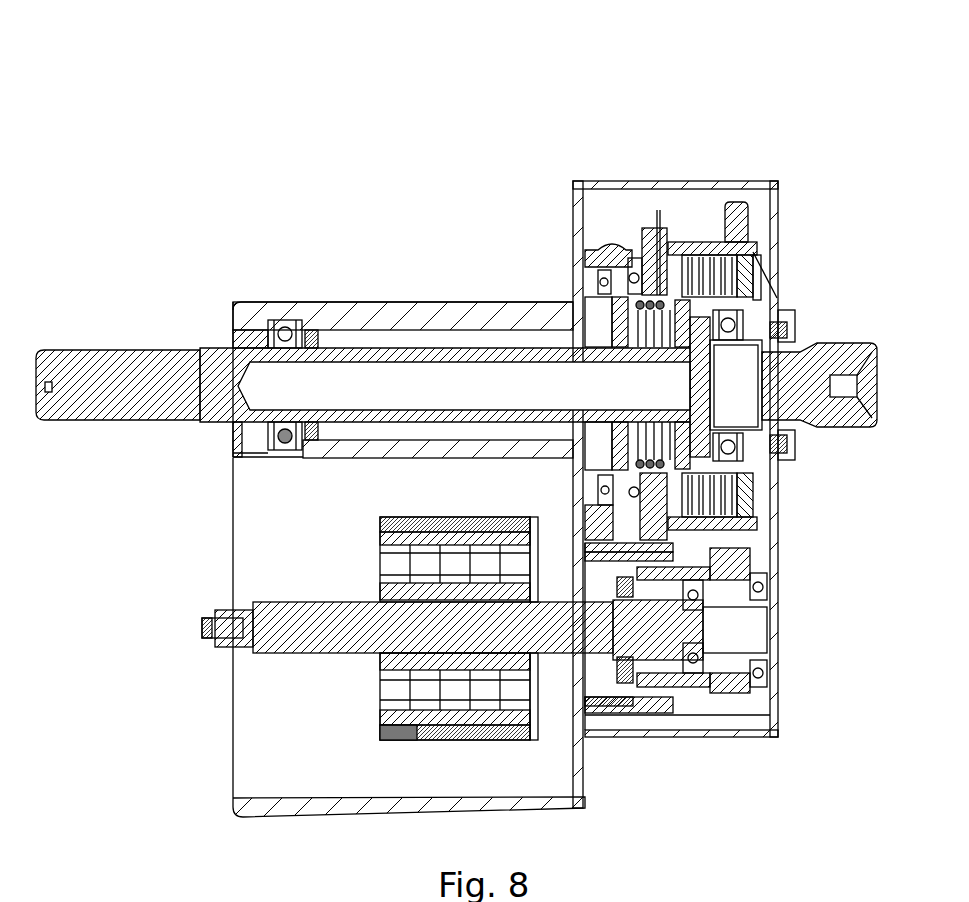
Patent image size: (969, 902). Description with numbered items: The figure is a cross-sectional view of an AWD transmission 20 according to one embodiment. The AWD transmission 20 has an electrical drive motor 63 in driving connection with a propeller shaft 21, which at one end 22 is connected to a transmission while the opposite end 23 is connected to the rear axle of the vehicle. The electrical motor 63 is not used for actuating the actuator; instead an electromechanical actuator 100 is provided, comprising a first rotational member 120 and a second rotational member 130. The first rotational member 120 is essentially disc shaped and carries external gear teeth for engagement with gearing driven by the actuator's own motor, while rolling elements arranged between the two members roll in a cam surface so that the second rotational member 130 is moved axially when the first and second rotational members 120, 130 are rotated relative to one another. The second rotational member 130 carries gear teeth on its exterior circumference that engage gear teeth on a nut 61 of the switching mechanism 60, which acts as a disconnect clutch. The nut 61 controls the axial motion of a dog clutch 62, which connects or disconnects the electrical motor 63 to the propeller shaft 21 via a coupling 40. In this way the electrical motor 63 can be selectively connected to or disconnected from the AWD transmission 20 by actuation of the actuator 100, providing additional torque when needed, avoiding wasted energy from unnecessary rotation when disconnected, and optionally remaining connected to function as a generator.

The AWD transmission 20 is at (704, 105).
The propeller shaft 21 is at (305, 352).
The end 22 is at (830, 345).
The opposite end 23 is at (125, 413).
The coupling 40 is at (762, 240).
The switching mechanism 60 is at (700, 560).
The nut 61 is at (668, 707).
The dog clutch 62 is at (700, 543).
The electrical drive motor 63 is at (485, 733).
The electromechanical actuator 100 is at (631, 205).
The first rotational member 120 is at (600, 253).
The second rotational member 130 is at (652, 245).